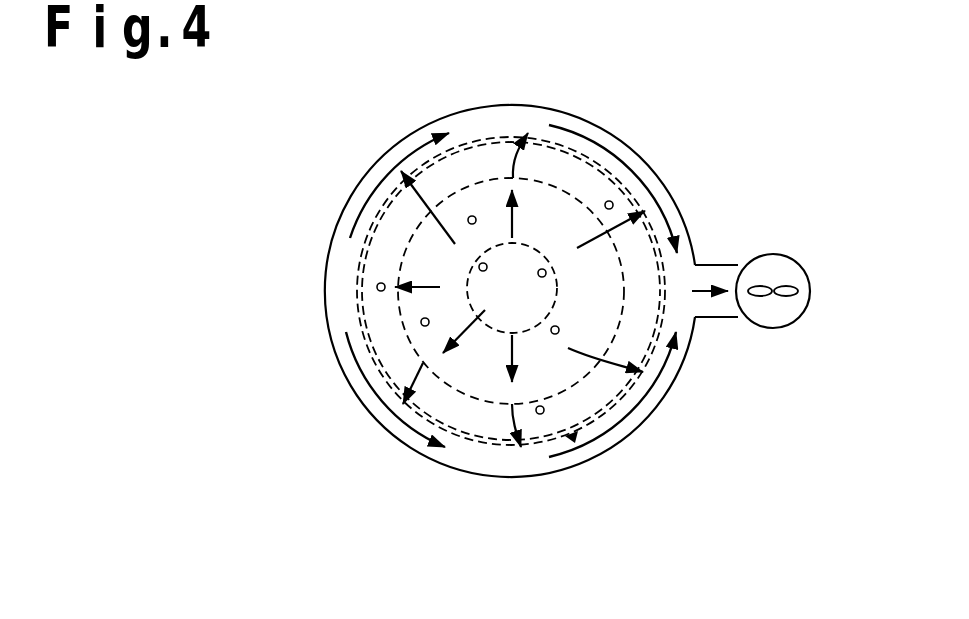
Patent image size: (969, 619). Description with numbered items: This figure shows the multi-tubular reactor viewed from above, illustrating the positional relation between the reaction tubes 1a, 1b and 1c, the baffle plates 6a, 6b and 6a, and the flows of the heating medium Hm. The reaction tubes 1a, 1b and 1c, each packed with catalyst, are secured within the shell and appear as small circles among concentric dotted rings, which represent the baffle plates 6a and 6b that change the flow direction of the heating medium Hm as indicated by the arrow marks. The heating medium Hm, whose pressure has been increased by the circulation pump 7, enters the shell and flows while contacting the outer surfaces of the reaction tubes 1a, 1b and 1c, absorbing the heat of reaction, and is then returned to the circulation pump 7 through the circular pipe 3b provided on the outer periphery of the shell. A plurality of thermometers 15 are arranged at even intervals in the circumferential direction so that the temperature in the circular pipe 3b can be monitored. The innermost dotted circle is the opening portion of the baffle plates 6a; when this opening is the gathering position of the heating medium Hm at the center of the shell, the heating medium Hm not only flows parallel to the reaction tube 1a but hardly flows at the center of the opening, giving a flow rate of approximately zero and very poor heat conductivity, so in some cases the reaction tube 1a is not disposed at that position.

The reaction tube 1a is at (470, 262).
The reaction tube 1b is at (421, 324).
The reaction tube 1c is at (376, 287).
The circular pipe 3b is at (531, 289).
The baffle plate 6a is at (525, 288).
The baffle plate 6b is at (511, 291).
The circulation pump 7 is at (773, 303).
The thermometer 15 is at (381, 178).
The heating medium Hm is at (508, 347).